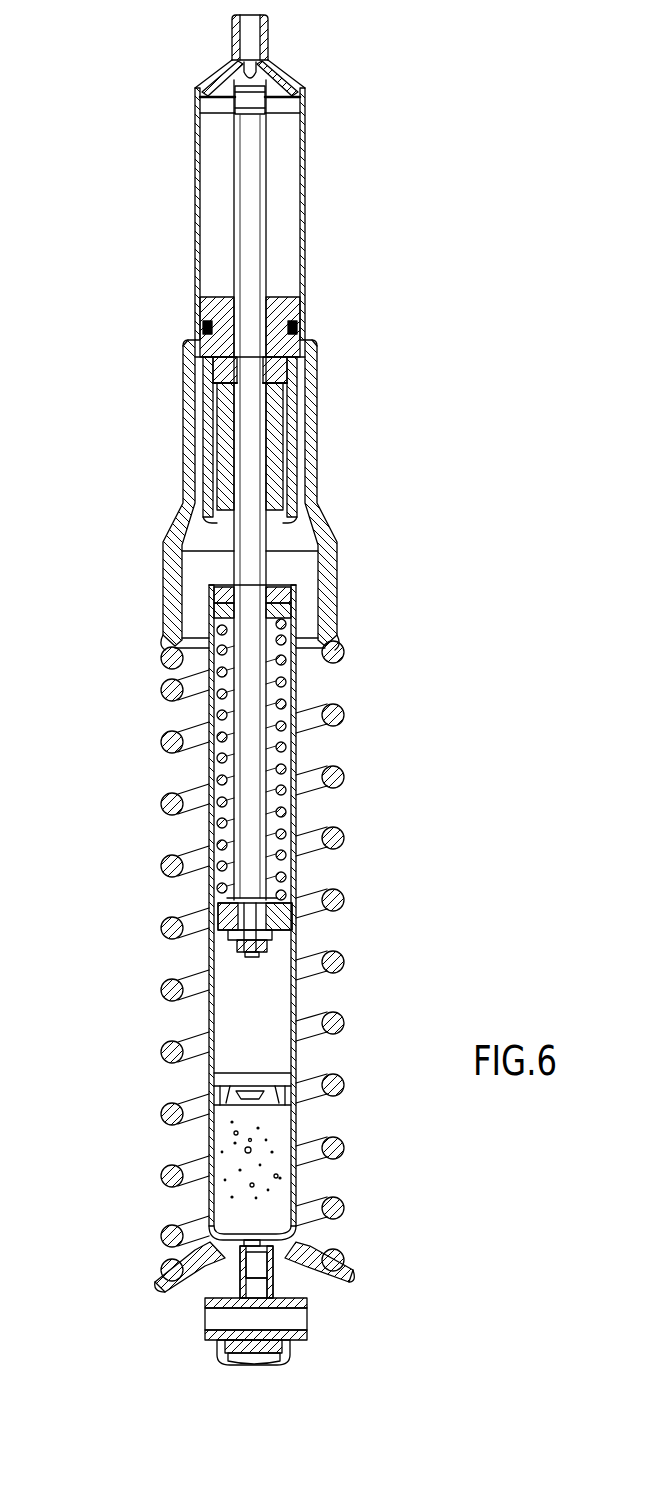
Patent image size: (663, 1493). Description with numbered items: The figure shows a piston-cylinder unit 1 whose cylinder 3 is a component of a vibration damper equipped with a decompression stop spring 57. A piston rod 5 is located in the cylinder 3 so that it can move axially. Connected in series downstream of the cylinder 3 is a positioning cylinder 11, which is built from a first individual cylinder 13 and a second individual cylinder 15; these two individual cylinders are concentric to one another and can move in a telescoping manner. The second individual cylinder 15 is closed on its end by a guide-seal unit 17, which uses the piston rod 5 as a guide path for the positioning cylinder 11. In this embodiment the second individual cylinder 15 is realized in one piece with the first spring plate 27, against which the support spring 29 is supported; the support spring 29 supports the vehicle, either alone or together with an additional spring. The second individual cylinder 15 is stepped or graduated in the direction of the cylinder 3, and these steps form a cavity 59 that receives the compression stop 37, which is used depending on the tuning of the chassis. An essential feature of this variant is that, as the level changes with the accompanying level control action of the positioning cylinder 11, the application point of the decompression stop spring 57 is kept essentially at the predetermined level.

The piston-cylinder unit 1 is at (85, 830).
The cylinder 3 is at (209, 1073).
The piston rod 5 is at (250, 180).
The positioning cylinder 11 is at (350, 336).
The first individual cylinder 13 is at (195, 127).
The second individual cylinder 15 is at (170, 590).
The guide-seal unit 17 is at (108, 297).
The first spring plate 27 is at (165, 641).
The support spring 29 is at (163, 927).
The compression stop 37 is at (222, 450).
The decompression stop spring 57 is at (209, 727).
The cavity 59 is at (182, 551).